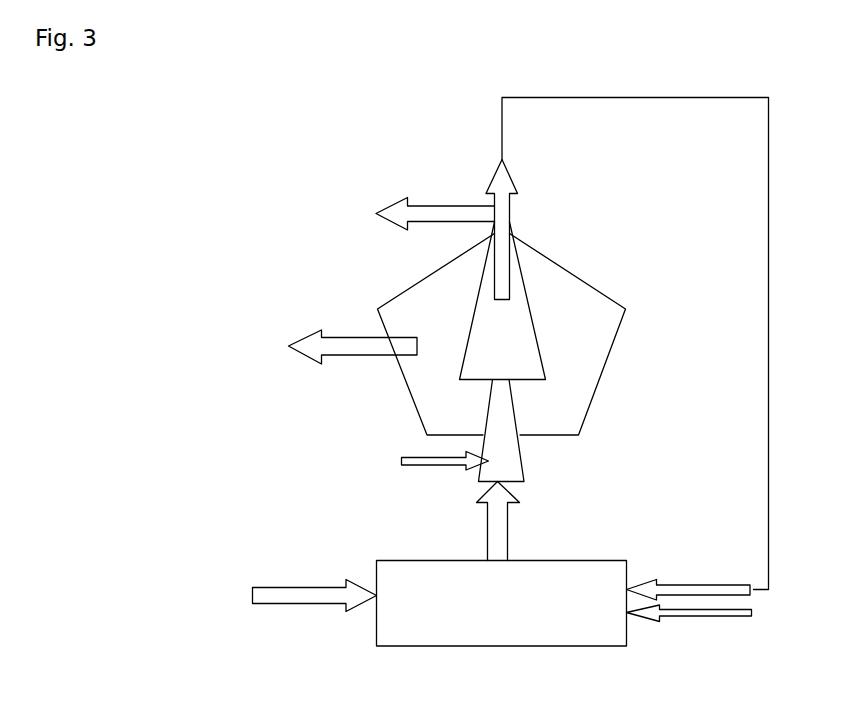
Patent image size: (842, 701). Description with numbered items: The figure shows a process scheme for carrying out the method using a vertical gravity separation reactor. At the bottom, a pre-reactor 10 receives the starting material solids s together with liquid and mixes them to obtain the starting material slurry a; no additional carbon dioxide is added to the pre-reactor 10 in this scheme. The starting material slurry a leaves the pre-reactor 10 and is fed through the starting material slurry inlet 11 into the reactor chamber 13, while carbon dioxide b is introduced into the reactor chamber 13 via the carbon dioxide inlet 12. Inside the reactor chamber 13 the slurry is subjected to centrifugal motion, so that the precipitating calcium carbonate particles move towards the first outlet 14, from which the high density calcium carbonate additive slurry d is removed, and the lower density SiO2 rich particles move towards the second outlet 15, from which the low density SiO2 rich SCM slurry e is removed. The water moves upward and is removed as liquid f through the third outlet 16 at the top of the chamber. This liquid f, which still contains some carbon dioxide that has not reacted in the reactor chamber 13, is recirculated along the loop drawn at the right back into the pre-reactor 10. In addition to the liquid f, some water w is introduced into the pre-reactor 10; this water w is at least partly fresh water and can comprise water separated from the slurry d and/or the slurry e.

The pre-reactor 10 is at (499, 604).
The starting material slurry inlet 11 is at (504, 490).
The carbon dioxide inlet 12 is at (483, 455).
The reactor chamber 13 is at (582, 278).
The first outlet 14 is at (342, 337).
The second outlet 15 is at (445, 206).
The third outlet 16 is at (517, 170).
The starting material slurry a is at (495, 534).
The carbon dioxide b is at (422, 461).
The high density calcium carbonate additive slurry d is at (333, 347).
The low density SiO2 rich SCM slurry e is at (416, 214).
The liquid f is at (557, 98).
The solids s is at (295, 596).
The water w is at (706, 616).